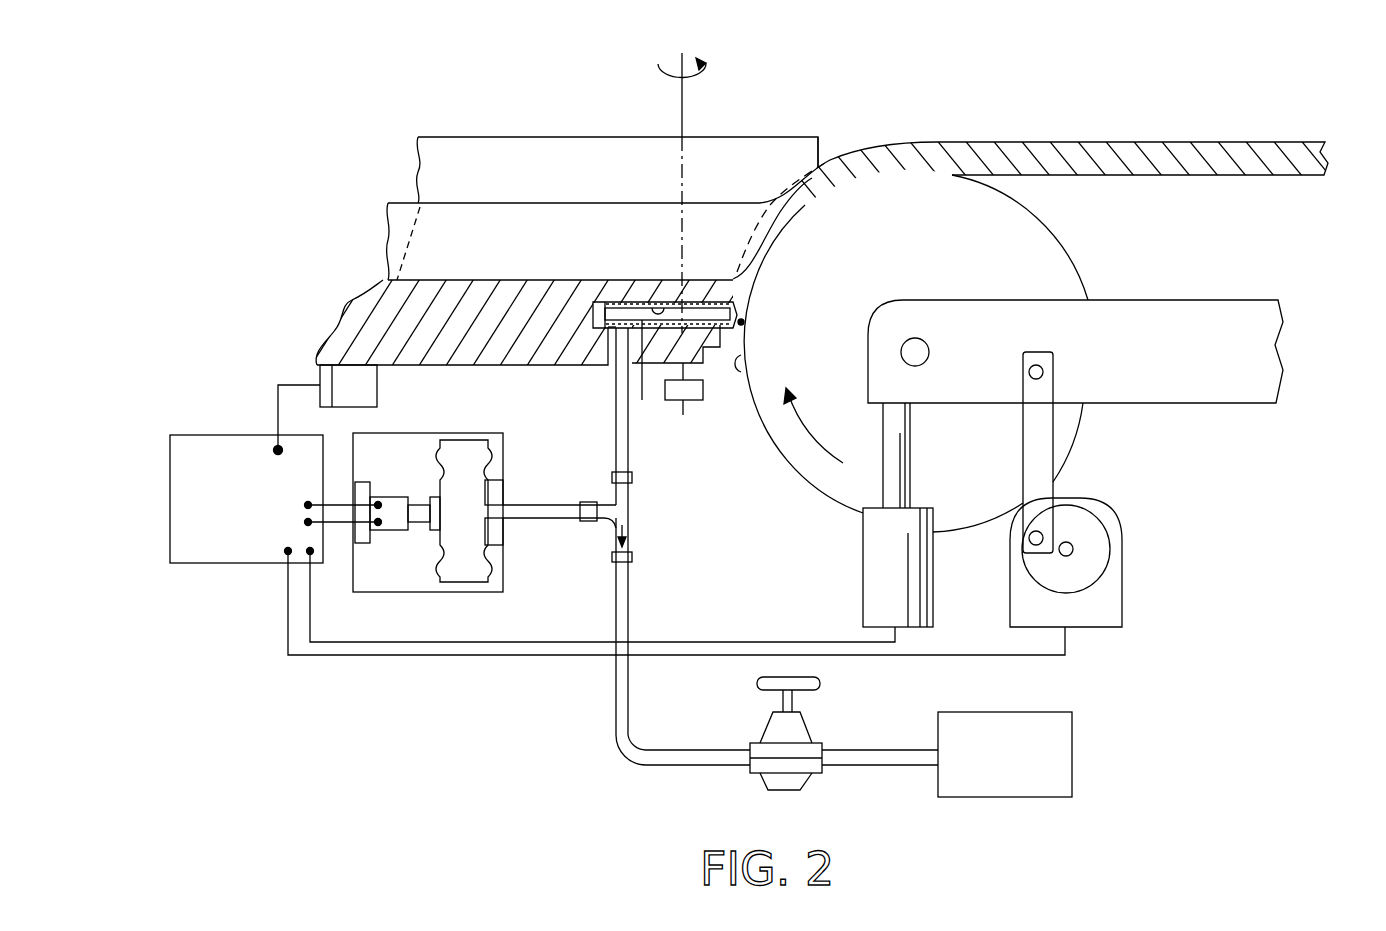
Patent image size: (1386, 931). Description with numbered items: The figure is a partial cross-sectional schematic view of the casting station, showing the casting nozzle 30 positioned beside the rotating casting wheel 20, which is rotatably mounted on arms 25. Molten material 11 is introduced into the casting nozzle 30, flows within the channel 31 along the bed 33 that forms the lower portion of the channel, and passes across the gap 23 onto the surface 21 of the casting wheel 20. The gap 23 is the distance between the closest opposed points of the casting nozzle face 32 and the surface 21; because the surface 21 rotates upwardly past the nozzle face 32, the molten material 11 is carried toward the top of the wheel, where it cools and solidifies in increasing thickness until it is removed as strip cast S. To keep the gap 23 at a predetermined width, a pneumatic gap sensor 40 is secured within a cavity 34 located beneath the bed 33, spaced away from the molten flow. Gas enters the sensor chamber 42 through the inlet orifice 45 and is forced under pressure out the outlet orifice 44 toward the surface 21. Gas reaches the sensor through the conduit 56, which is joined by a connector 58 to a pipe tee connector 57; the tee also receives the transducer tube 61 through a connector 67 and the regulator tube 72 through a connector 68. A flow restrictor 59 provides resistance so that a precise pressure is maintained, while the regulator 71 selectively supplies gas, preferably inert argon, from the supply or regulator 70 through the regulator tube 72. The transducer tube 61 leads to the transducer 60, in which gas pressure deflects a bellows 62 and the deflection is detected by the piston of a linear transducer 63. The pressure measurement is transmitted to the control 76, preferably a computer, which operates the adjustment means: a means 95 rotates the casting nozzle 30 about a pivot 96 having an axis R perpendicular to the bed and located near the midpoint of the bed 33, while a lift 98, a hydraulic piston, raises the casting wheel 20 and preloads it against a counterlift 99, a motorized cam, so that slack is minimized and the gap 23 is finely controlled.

The axis R is at (682, 180).
The strip cast S is at (1140, 150).
The molten material 11 is at (405, 203).
The casting wheel 20 is at (1028, 273).
The surface 21 is at (745, 370).
The gap 23 is at (748, 285).
The arms 25 is at (1170, 363).
The casting nozzle 30 is at (808, 130).
The channel 31 is at (578, 137).
The casting nozzle face 32 is at (762, 225).
The bed 33 is at (562, 280).
The cavity 34 is at (660, 300).
The pneumatic gap sensor 40 is at (745, 322).
The chamber 42 is at (642, 335).
The outlet orifice 44 is at (745, 308).
The inlet orifice 45 is at (610, 372).
The conduit 56 is at (616, 412).
The pipe tee connector 57 is at (614, 524).
The connector 58 is at (630, 478).
The flow restrictor 59 is at (624, 525).
The transducer 60 is at (425, 580).
The transducer tube 61 is at (518, 522).
The bellows 62 is at (438, 450).
The linear transducer 63 is at (403, 520).
The connector 67 is at (588, 502).
The connector 68 is at (630, 562).
The regulator 70 is at (1072, 750).
The regulator 71 is at (810, 722).
The regulator tube 72 is at (632, 614).
The control 76 is at (246, 560).
The means for rotating casting nozzle 95 is at (378, 390).
The pivot 96 is at (705, 392).
The lift 98 is at (900, 578).
The counterlift 99 is at (1098, 506).